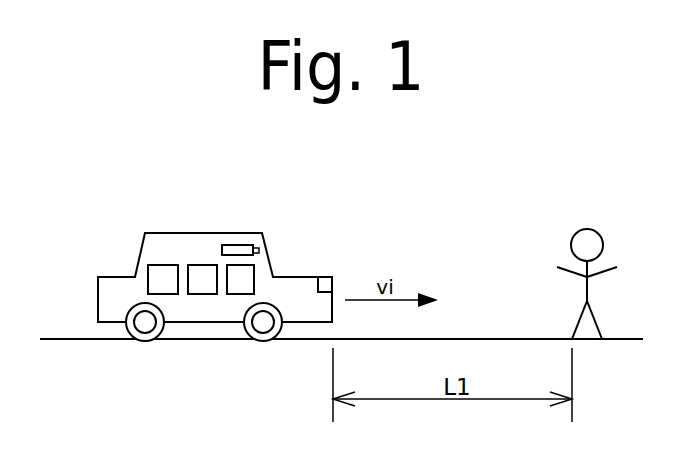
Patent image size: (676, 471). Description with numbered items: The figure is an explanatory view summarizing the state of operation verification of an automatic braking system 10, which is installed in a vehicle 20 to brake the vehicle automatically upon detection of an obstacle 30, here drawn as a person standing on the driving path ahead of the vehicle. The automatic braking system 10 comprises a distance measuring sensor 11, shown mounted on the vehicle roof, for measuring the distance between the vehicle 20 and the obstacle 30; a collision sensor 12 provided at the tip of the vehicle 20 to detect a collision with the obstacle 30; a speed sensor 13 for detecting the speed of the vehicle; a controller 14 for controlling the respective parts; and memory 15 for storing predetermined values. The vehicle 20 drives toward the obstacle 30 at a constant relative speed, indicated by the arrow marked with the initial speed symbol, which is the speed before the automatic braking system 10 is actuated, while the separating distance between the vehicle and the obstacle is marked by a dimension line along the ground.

The automatic braking system 10 is at (225, 281).
The vehicle 20 is at (168, 233).
The distance measuring sensor 11 is at (237, 245).
The collision sensor 12 is at (326, 277).
The speed sensor 13 is at (163, 279).
The controller 14 is at (202, 279).
The memory 15 is at (240, 279).
The obstacle 30 is at (586, 229).